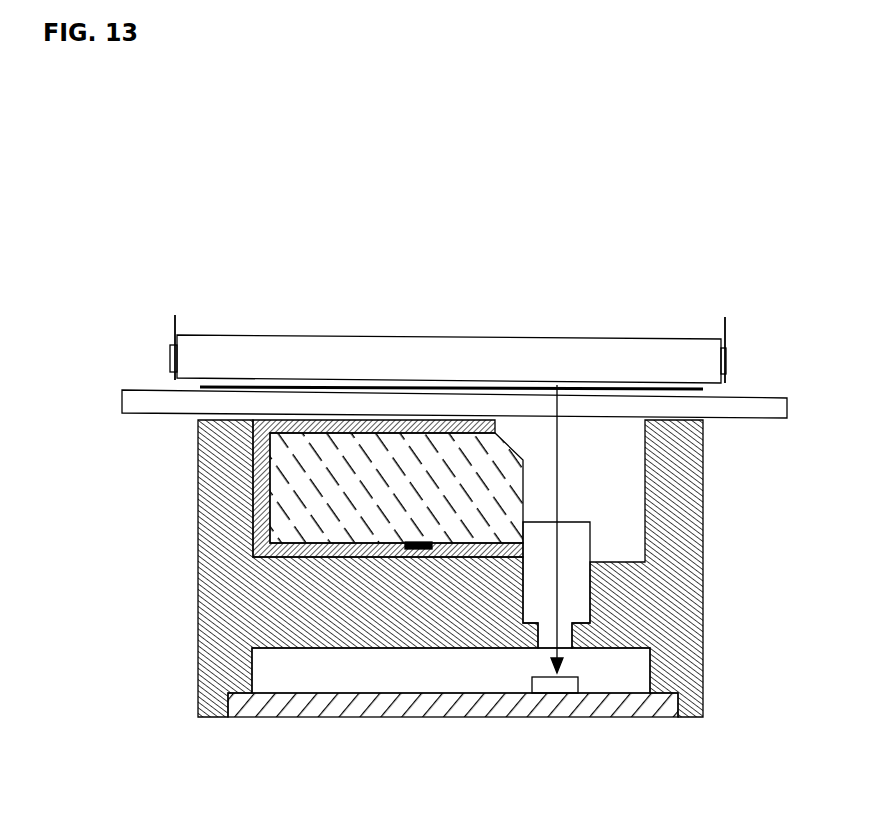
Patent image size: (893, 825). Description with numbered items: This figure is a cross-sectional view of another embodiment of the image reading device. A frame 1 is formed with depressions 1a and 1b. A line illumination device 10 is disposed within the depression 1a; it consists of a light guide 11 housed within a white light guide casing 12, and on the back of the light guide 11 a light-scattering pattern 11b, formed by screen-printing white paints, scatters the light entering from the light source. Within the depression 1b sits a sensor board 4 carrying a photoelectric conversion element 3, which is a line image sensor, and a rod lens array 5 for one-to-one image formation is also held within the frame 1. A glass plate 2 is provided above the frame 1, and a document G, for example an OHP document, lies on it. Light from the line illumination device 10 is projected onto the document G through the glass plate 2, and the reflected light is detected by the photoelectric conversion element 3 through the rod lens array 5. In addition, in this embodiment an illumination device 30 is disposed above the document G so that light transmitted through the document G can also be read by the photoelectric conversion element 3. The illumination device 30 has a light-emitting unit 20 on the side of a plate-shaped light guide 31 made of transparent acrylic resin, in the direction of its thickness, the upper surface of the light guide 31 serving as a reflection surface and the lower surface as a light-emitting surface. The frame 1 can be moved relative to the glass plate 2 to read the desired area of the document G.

The frame 1 is at (225, 593).
The depression 1a is at (646, 494).
The depression 1b is at (253, 668).
The glass plate 2 is at (320, 408).
The photoelectric conversion element 3 is at (553, 693).
The sensor board 4 is at (630, 700).
The rod lens array 5 is at (573, 593).
The line illumination device 10 is at (128, 453).
The light guide 11 is at (303, 507).
The light-scattering pattern 11b is at (418, 550).
The light guide casing 12 is at (258, 463).
The light-emitting unit 20 is at (727, 358).
The illumination device 30 is at (138, 356).
The plate-shaped light guide 31 is at (608, 353).
The document G is at (459, 389).